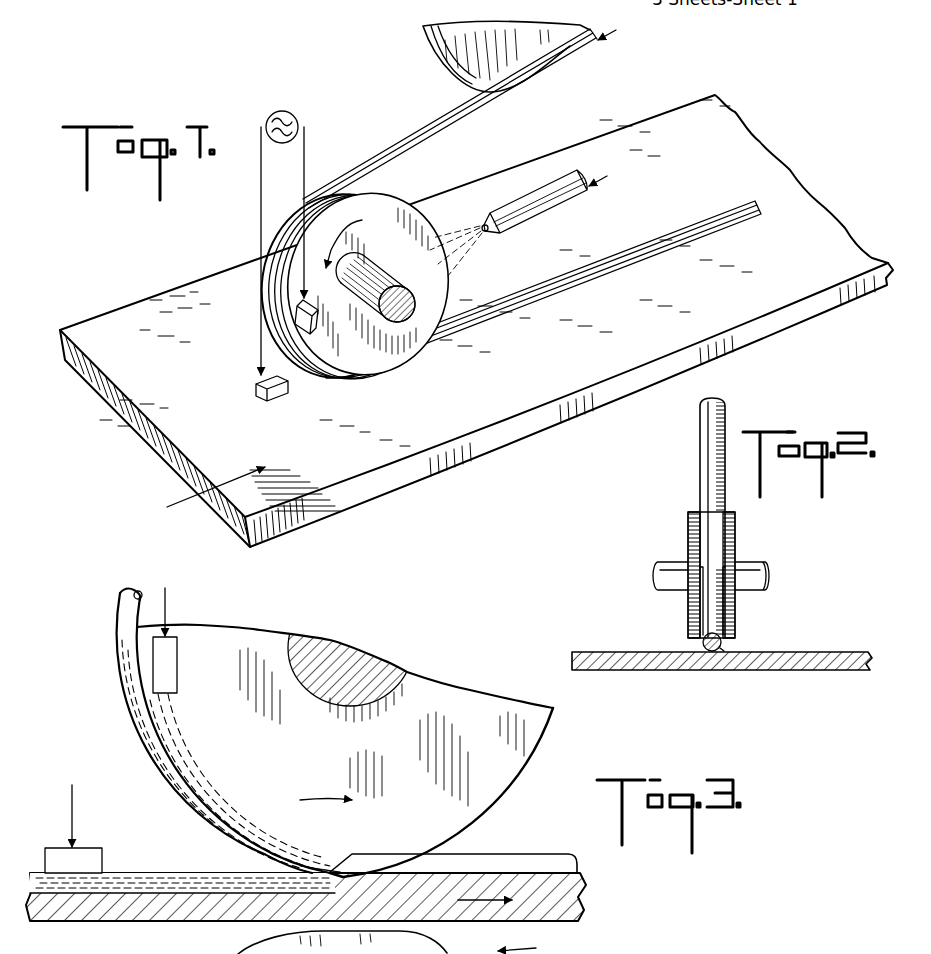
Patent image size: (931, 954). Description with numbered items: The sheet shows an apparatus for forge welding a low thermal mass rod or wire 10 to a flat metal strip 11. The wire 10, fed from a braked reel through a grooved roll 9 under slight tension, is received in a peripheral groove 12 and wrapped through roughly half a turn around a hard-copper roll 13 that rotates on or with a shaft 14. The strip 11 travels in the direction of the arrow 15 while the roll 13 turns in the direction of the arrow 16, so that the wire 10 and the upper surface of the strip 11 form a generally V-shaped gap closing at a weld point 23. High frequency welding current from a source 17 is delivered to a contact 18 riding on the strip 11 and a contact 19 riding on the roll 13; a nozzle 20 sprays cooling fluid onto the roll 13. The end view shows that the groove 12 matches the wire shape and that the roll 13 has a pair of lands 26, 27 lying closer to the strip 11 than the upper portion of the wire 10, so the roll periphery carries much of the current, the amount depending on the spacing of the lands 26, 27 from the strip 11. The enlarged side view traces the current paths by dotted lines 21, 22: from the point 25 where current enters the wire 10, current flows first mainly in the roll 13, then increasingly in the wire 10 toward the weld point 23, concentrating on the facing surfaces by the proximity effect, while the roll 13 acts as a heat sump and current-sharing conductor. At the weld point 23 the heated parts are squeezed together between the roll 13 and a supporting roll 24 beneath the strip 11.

In FIG. 1, the grooved roll 9 is at (433, 48).
In FIG. 1, the wire 10 is at (443, 124).
In FIG. 2, the wire 10 is at (726, 432).
In FIG. 3, the wire 10 is at (122, 673).
In FIG. 1, the strip 11 is at (478, 408).
In FIG. 2, the strip 11 is at (788, 670).
In FIG. 3, the strip 11 is at (70, 905).
In FIG. 1, the peripheral groove 12 is at (395, 186).
In FIG. 2, the peripheral groove 12 is at (712, 522).
In FIG. 1, the roll 13 is at (443, 302).
In FIG. 2, the roll 13 is at (737, 535).
In FIG. 3, the roll 13 is at (550, 738).
In FIG. 1, the shaft 14 is at (398, 287).
In FIG. 2, the shaft 14 is at (752, 572).
In FIG. 1, the arrow 15 is at (242, 452).
In FIG. 1, the arrow 16 is at (368, 216).
In FIG. 1, the source 17 is at (292, 113).
In FIG. 1, the contact 18 is at (280, 392).
In FIG. 3, the contact 18 is at (90, 847).
In FIG. 1, the contact 19 is at (320, 315).
In FIG. 3, the contact 19 is at (178, 661).
In FIG. 1, the nozzle 20 is at (534, 210).
In FIG. 3, the dotted line 21 is at (140, 873).
In FIG. 3, the dotted line 22 is at (208, 788).
In FIG. 3, the weld point 23 is at (345, 868).
In FIG. 3, the supporting roll 24 is at (262, 947).
In FIG. 3, the point 25 is at (152, 738).
In FIG. 2, the land 26 is at (725, 646).
In FIG. 2, the land 27 is at (701, 646).